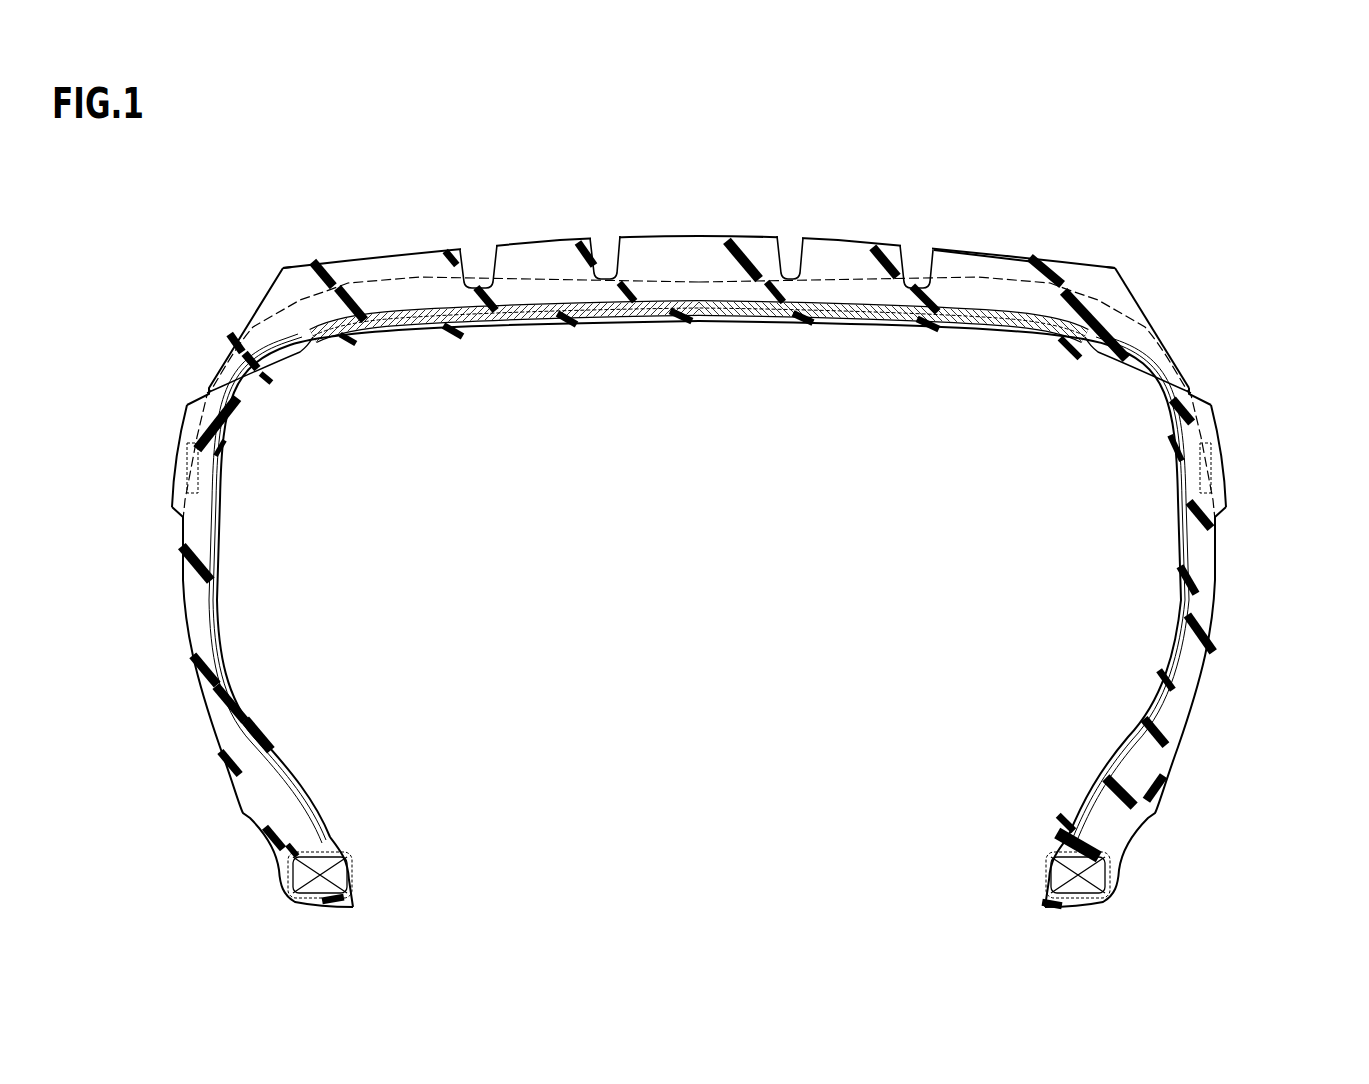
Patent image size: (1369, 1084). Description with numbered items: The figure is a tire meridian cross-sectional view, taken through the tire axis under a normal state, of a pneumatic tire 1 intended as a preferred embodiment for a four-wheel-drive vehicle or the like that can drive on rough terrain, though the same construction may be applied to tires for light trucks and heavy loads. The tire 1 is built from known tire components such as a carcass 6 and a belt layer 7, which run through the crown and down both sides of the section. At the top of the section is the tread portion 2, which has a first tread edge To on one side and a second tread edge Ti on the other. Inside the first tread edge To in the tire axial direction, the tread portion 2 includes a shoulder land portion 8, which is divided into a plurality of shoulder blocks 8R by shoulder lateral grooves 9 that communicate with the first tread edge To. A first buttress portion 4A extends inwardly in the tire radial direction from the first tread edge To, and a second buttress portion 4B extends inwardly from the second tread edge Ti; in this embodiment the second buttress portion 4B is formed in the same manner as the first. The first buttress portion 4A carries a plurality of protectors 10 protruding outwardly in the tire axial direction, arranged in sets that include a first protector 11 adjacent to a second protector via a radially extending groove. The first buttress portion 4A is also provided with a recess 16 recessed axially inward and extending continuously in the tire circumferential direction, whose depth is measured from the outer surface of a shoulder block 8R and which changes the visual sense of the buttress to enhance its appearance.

The pneumatic tire 1 is at (1083, 209).
The tread portion 2 is at (850, 227).
The first buttress portion 4A is at (1250, 378).
The second buttress portion 4B is at (185, 384).
The carcass 6 is at (1185, 481).
The belt layer 7 is at (847, 308).
The shoulder land portion 8 is at (947, 230).
The shoulder block 8R is at (975, 252).
The shoulder lateral groove 9 is at (1005, 266).
The protector 10 is at (168, 414).
The first protector 11 is at (174, 497).
The recess 16 is at (1203, 391).
The second tread edge Ti is at (283, 267).
The first tread edge To is at (1115, 267).